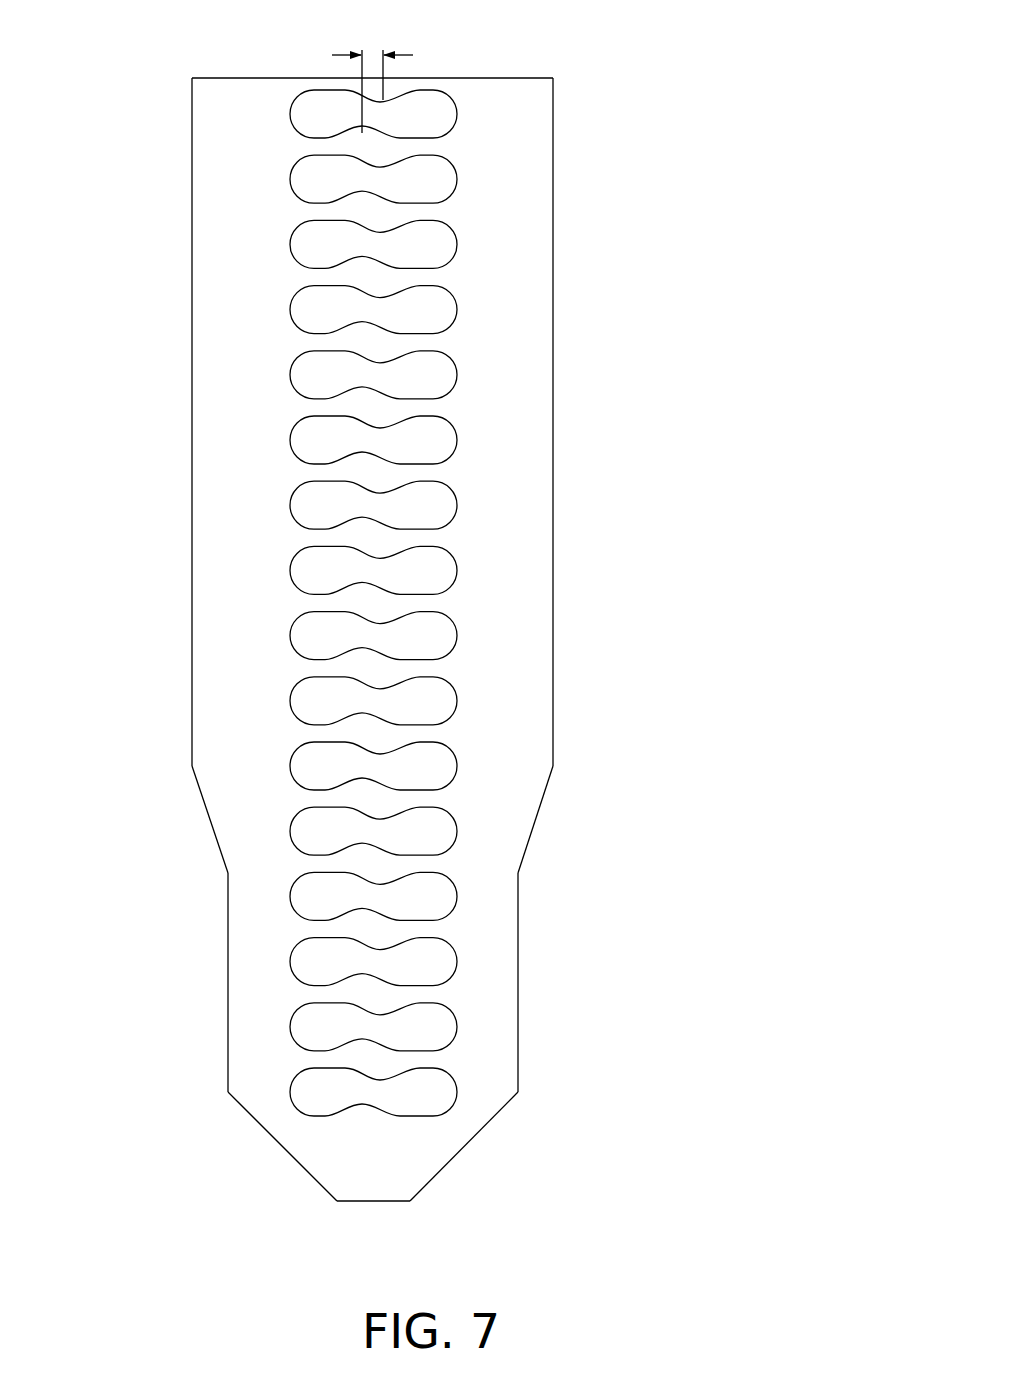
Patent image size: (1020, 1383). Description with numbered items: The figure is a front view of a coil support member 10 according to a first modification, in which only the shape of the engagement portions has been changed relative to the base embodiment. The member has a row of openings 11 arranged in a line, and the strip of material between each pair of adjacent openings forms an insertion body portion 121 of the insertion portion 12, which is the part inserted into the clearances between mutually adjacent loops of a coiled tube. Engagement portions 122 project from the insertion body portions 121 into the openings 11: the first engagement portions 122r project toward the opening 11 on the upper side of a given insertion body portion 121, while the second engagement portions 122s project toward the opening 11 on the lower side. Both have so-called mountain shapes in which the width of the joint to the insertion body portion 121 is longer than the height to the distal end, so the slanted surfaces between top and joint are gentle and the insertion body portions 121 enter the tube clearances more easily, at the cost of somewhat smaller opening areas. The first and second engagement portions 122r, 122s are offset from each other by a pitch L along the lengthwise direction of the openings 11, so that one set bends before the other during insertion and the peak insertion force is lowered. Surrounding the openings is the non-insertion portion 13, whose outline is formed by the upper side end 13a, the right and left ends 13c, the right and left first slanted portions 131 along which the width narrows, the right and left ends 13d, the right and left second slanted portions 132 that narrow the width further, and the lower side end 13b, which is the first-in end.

The coil support member 10 is at (620, 94).
The opening 11 is at (412, 591).
The insertion portion 12 is at (760, 390).
The insertion body portion 121 is at (415, 538).
The engagement portion 122 is at (687, 370).
The first engagement portion 122r is at (376, 387).
The second engagement portion 122s is at (401, 428).
The non-insertion portion 13 is at (520, 720).
The upper side end 13a is at (250, 77).
The lower side end 13b is at (371, 1204).
The right and left ends 13c is at (556, 261).
The right and left ends 13d is at (226, 968).
The first slanted portion 131 is at (203, 812).
The second slanted portion 132 is at (261, 1133).
The pitch L is at (372, 75).